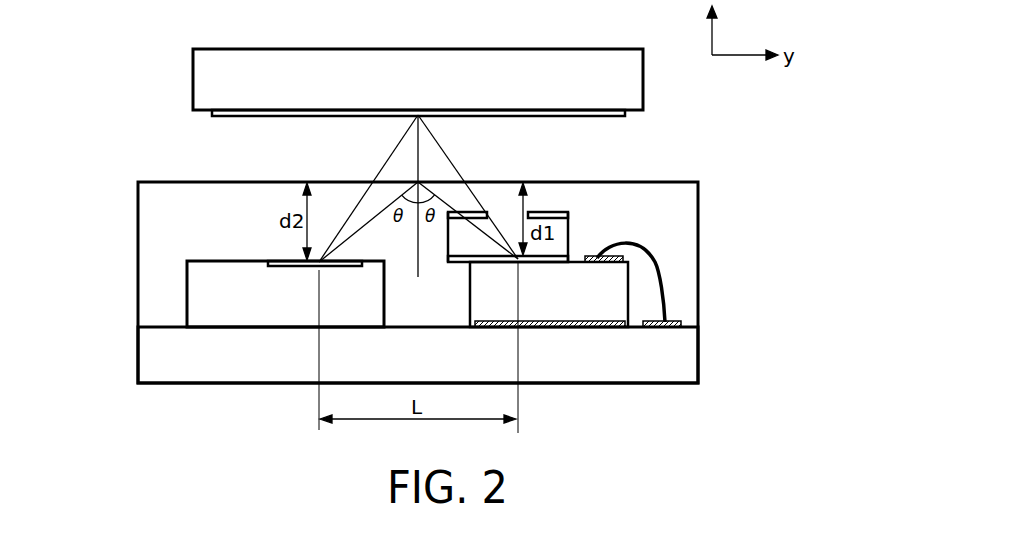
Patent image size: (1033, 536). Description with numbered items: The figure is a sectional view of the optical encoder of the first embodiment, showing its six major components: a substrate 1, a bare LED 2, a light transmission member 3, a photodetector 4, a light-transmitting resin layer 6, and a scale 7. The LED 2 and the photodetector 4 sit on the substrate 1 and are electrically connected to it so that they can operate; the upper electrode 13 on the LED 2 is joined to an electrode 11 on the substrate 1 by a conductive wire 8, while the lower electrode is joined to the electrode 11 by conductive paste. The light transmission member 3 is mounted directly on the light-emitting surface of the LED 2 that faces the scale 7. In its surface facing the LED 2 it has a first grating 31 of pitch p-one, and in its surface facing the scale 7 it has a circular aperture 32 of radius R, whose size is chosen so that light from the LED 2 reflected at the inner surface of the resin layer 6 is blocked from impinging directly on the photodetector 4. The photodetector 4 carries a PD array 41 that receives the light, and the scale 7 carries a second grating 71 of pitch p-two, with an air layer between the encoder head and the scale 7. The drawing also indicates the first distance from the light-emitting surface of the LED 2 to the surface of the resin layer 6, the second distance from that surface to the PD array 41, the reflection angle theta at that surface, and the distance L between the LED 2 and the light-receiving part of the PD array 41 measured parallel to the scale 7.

The substrate 1 is at (203, 370).
The bare LED 2 is at (628, 275).
The light transmission member 3 is at (568, 224).
The photodetector 4 is at (200, 305).
The light-transmitting resin layer 6 is at (698, 217).
The scale 7 is at (200, 80).
The conductive wire 8 is at (667, 309).
The electrode 11 is at (600, 327).
The upper electrode 13 is at (595, 262).
The first grating 31 is at (550, 257).
The circular aperture 32 is at (548, 212).
The PD array 41 is at (278, 262).
The second grating 71 is at (625, 113).